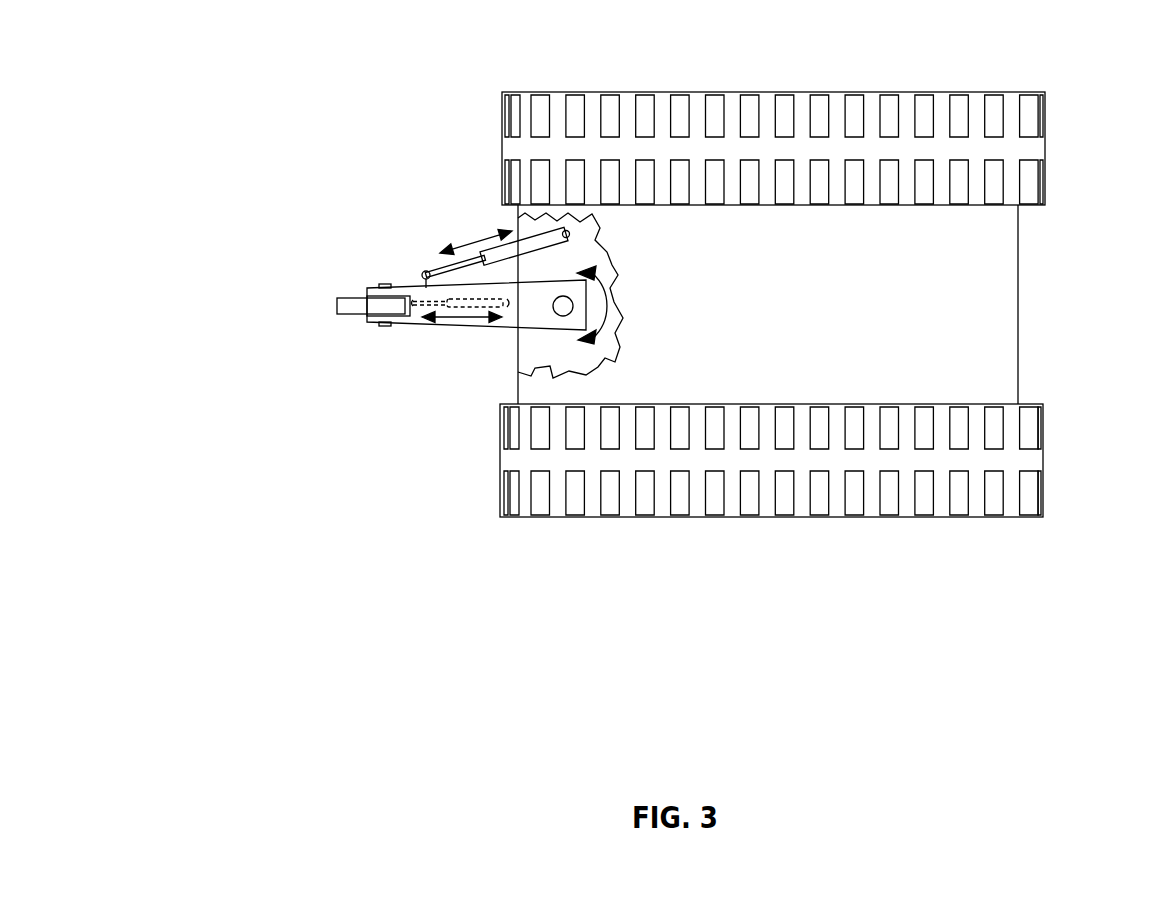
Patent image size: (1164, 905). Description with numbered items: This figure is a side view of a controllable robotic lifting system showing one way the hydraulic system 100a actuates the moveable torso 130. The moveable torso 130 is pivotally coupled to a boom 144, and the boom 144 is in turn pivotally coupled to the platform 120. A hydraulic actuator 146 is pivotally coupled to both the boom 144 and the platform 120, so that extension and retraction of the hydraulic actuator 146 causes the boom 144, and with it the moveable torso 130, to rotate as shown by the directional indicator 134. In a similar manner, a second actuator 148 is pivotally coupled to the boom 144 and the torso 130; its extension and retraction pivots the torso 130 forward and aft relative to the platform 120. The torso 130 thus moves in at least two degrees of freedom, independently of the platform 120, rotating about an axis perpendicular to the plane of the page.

The hydraulic system 100a is at (172, 108).
The platform 120 is at (1005, 261).
The moveable torso 130 is at (337, 305).
The directional indicator 134 is at (600, 282).
The boom 144 is at (490, 325).
The hydraulic actuator 146 is at (431, 265).
The actuator 148 is at (418, 320).